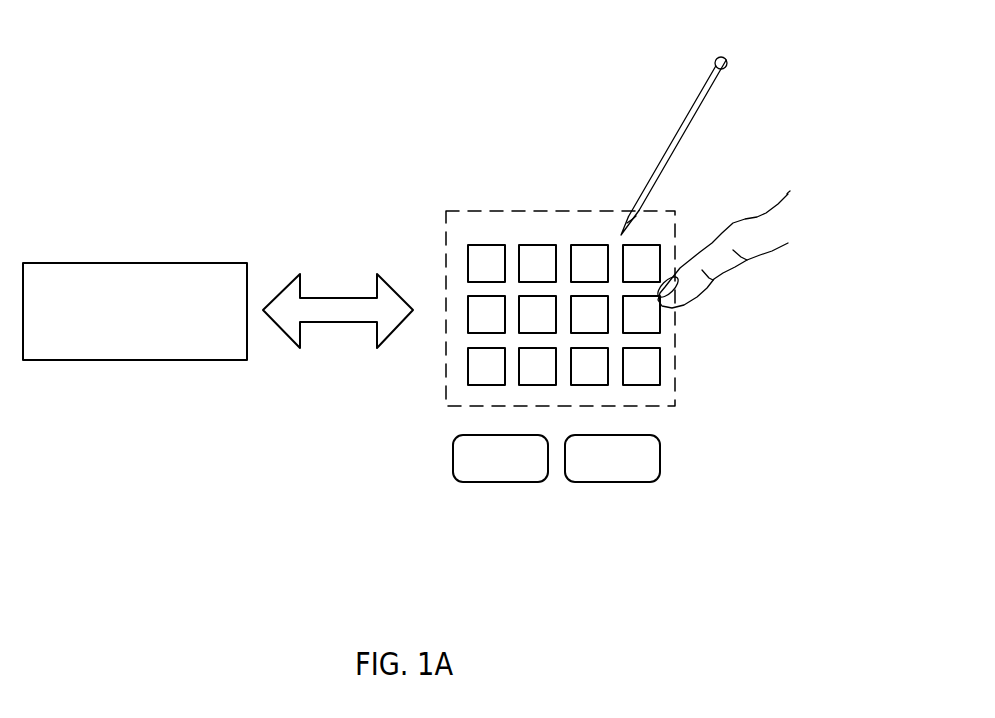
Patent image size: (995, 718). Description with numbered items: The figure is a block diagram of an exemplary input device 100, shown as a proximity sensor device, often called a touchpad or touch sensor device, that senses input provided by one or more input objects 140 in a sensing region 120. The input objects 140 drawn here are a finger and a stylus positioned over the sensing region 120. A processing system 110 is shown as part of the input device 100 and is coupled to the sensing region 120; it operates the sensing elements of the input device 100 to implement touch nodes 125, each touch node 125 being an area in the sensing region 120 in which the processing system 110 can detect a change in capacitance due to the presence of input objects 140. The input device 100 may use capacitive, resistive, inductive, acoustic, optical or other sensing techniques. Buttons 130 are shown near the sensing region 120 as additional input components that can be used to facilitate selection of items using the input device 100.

The input device 100 is at (341, 108).
The processing system 110 is at (178, 262).
The sensing region 120 is at (619, 268).
The touch node 125 is at (538, 245).
The buttons 130 is at (493, 482).
The input objects 140 is at (730, 63).